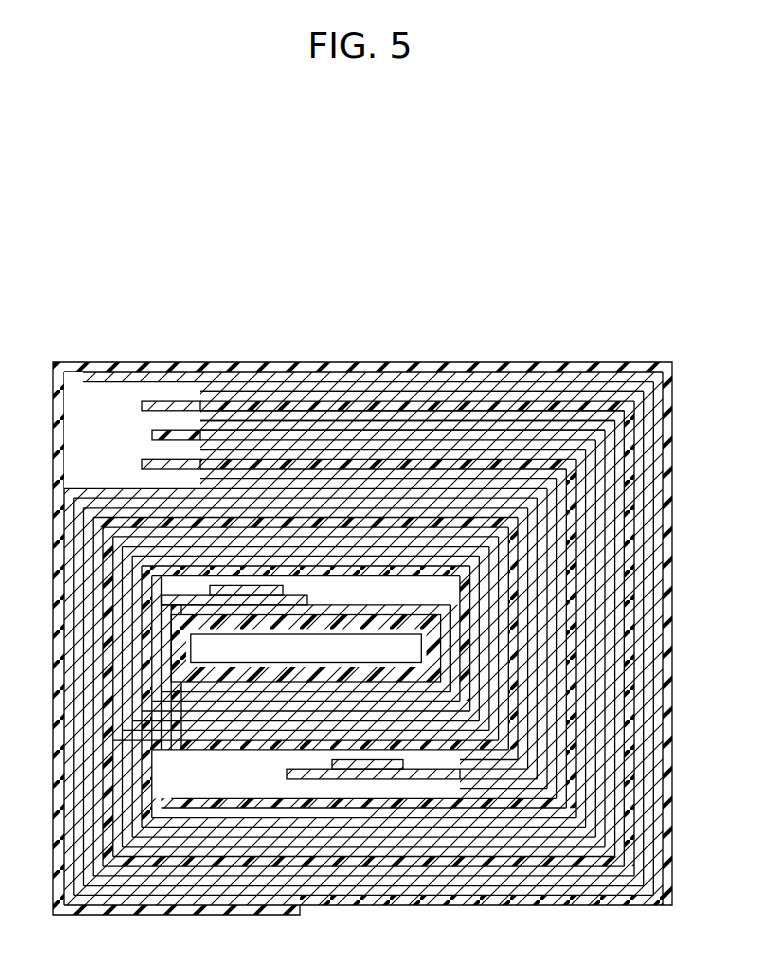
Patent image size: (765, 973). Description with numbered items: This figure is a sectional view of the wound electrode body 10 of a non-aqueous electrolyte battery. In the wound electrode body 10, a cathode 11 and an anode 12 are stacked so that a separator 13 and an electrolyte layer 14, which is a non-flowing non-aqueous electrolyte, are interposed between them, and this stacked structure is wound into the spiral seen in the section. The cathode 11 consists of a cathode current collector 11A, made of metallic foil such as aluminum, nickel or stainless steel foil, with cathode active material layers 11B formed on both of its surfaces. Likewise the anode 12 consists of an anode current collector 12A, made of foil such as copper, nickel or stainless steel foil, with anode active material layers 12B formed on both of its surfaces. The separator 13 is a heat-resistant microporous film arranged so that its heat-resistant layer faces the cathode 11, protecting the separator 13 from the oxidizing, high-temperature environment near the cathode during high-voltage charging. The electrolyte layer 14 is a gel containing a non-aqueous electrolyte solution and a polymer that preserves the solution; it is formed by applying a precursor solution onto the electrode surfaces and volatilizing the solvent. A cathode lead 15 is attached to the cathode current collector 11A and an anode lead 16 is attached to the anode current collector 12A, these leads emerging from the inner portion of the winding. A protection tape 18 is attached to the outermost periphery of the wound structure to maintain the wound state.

The wound electrode body 10 is at (557, 192).
The cathode 11 is at (243, 258).
The cathode current collector 11A is at (163, 435).
The cathode active material layer 11B is at (237, 445).
The anode 12 is at (447, 258).
The anode current collector 12A is at (330, 385).
The anode active material layer 12B is at (430, 392).
The separator 13 is at (447, 465).
The electrolyte layer 14 is at (550, 440).
The cathode lead 15 is at (238, 590).
The anode lead 16 is at (357, 765).
The protection tape 18 is at (623, 368).